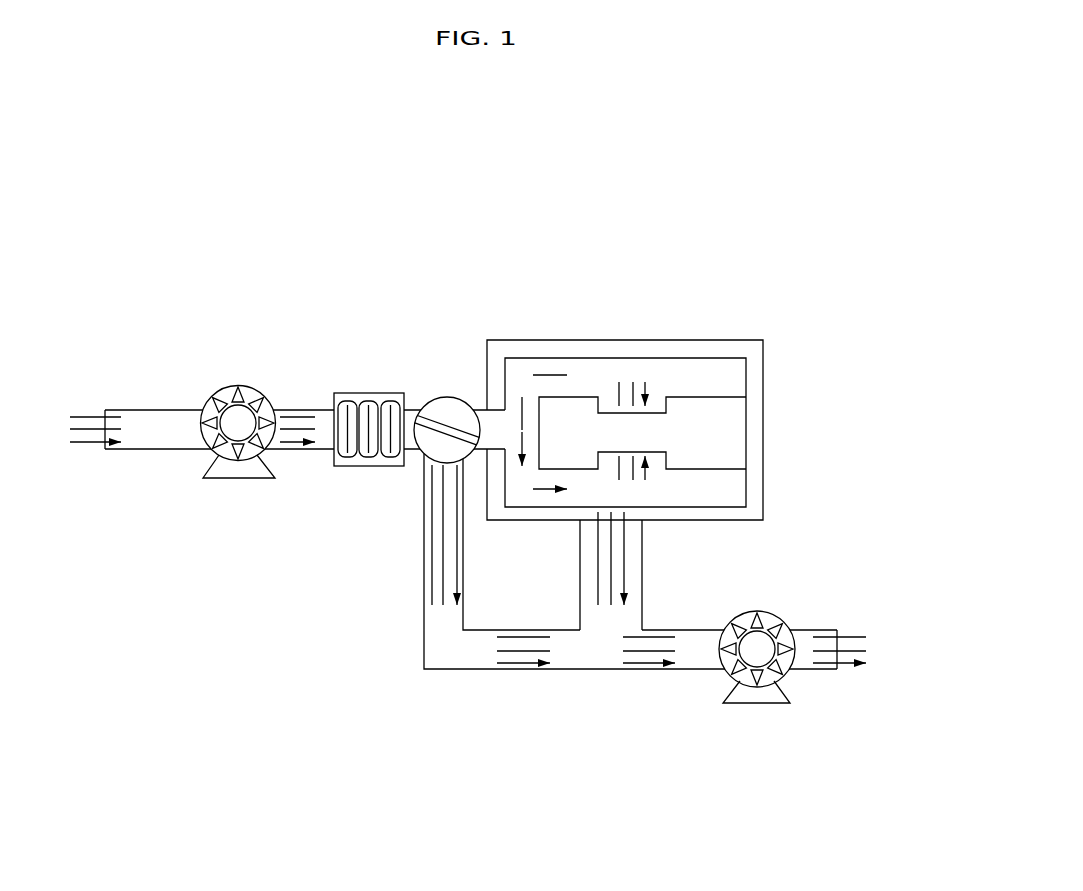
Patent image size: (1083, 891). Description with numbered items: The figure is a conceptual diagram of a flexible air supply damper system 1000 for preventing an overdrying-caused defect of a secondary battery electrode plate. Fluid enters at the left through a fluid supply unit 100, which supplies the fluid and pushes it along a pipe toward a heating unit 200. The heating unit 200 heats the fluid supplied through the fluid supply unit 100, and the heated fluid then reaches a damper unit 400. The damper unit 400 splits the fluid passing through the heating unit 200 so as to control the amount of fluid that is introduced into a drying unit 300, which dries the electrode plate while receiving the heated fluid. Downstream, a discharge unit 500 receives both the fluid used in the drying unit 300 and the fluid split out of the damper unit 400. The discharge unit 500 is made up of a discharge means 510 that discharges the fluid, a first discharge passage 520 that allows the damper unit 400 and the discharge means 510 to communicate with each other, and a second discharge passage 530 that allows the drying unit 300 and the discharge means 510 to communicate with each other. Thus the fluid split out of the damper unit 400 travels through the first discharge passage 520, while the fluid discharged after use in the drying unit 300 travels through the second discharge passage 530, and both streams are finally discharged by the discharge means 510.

The flexible air supply damper system 1000 is at (846, 200).
The fluid supply unit 100 is at (149, 368).
The heating unit 200 is at (330, 365).
The damper unit 400 is at (429, 370).
The drying unit 300 is at (596, 302).
The discharge unit 500 is at (834, 561).
The discharge means 510 is at (719, 673).
The first discharge passage 520 is at (502, 670).
The second discharge passage 530 is at (642, 575).